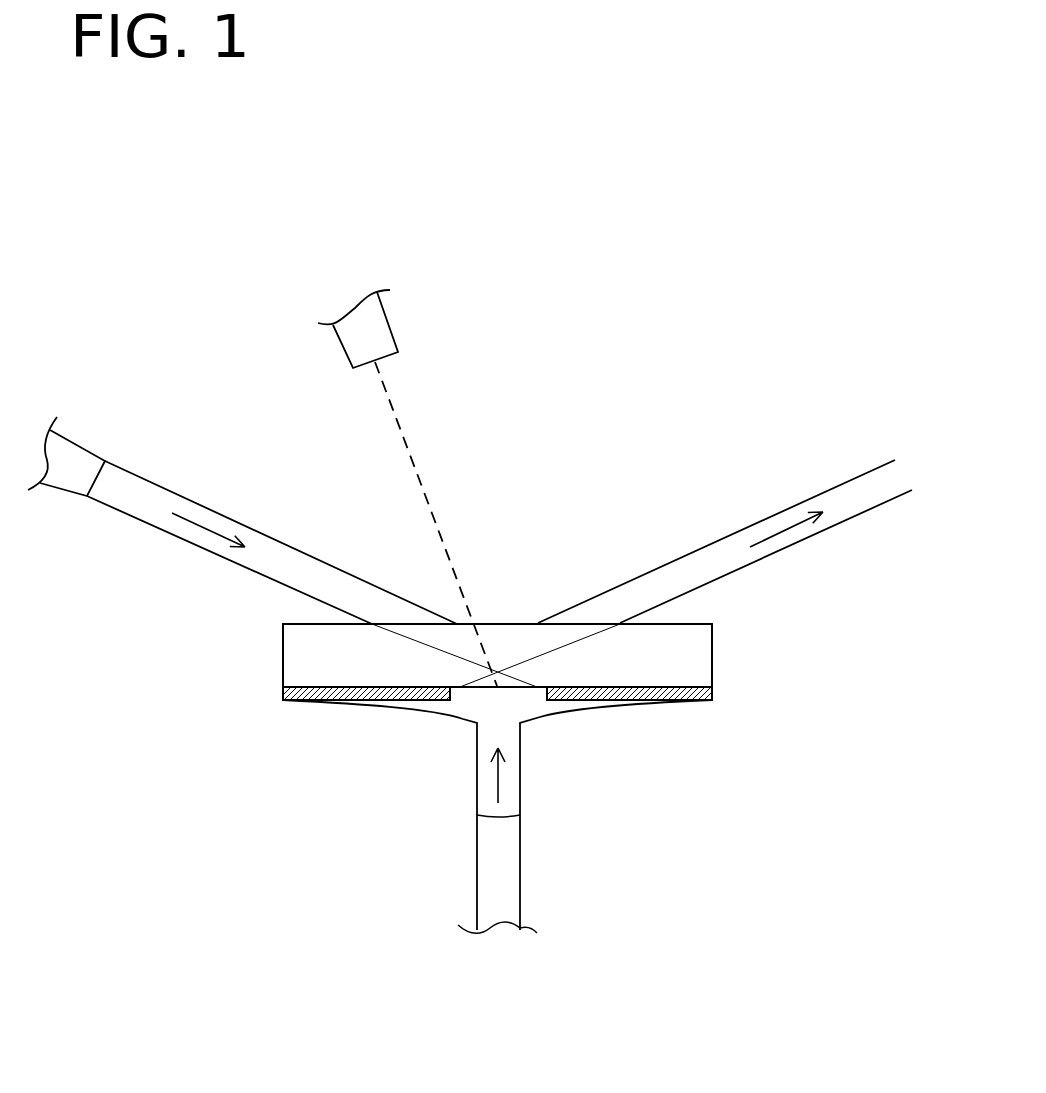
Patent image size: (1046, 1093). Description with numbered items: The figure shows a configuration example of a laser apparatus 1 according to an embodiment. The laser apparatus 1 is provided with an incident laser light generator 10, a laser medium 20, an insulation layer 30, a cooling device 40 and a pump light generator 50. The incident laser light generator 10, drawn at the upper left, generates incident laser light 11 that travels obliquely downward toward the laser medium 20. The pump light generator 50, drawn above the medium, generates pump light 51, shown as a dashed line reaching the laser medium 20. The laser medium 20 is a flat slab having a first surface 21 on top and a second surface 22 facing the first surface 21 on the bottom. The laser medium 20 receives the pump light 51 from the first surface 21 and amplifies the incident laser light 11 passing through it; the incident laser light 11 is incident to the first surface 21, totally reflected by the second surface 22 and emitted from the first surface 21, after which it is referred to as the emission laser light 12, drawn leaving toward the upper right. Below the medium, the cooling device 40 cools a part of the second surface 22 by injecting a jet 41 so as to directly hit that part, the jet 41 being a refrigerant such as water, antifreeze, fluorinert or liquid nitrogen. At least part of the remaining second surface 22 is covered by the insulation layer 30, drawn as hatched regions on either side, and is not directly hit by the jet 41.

The laser apparatus 1 is at (662, 300).
The incident laser light generator 10 is at (73, 445).
The incident laser light 11 is at (220, 516).
The emission laser light 12 is at (777, 535).
The laser medium 20 is at (710, 670).
The first surface 21 is at (506, 624).
The second surface 22 is at (472, 688).
The insulation layer 30 is at (283, 700).
The cooling device 40 is at (517, 870).
The jet 41 is at (553, 707).
The pump light generator 50 is at (363, 302).
The pump light 51 is at (403, 422).